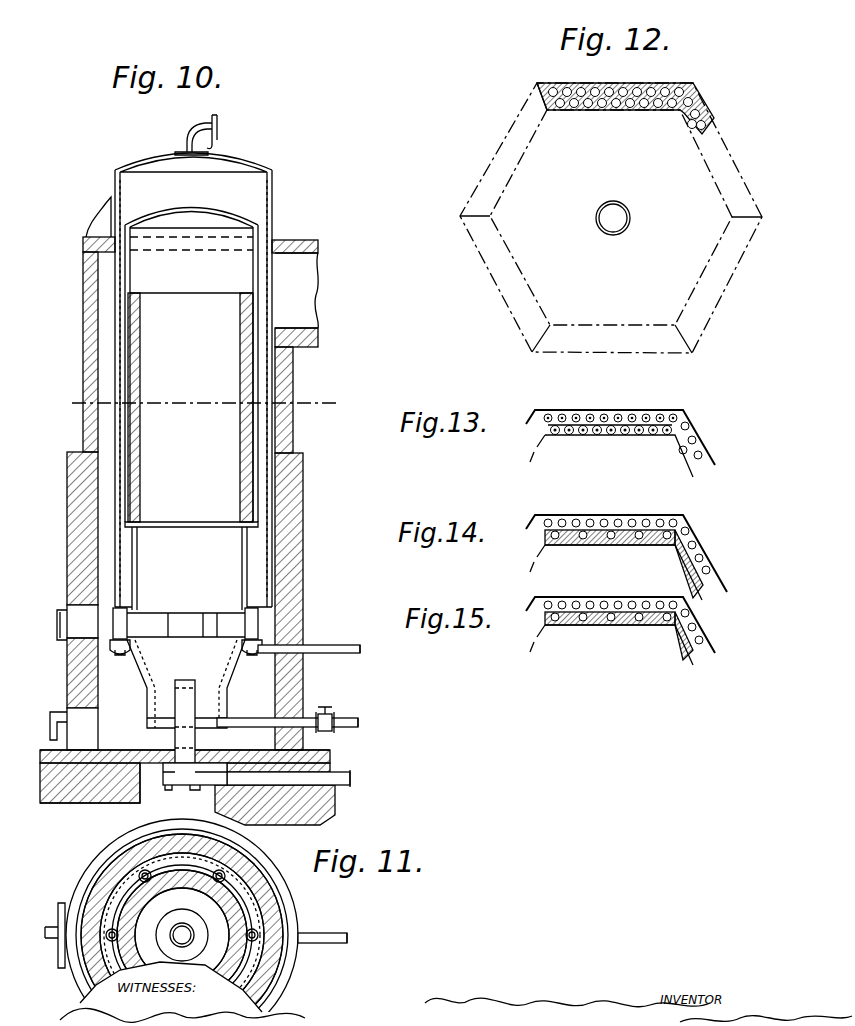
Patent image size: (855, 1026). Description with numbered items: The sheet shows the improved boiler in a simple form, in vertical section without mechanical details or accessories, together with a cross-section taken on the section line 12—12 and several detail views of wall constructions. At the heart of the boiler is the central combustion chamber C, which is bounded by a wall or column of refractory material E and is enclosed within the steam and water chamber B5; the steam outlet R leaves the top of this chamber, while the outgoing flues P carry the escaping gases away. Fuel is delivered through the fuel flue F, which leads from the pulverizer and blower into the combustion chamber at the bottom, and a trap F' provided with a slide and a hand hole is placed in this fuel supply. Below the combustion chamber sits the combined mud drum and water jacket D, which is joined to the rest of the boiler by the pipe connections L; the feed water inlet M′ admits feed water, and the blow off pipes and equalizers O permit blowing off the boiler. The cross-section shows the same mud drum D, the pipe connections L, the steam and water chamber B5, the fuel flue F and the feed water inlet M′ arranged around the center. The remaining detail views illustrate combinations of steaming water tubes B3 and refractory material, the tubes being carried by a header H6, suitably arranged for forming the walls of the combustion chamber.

In FIG. 10, the steam outlet R is at (219, 133).
In FIG. 10, the steam and water chamber B5 is at (250, 204).
In FIG. 11, the steam and water chamber B5 is at (248, 906).
In FIG. 10, the outgoing flues P is at (184, 473).
In FIG. 10, the central combustion chamber C is at (191, 368).
In FIG. 10, the wall or column of refractory material E is at (130, 470).
In FIG. 10, the section line 12 is at (192, 405).
In FIG. 10, the pipe connections L is at (165, 624).
In FIG. 11, the pipe connections L is at (110, 928).
In FIG. 10, the feed water inlet M′ is at (309, 663).
In FIG. 11, the feed water inlet M′ is at (338, 941).
In FIG. 10, the combined mud drum and water jacket D is at (222, 700).
In FIG. 11, the combined mud drum and water jacket D is at (212, 953).
In FIG. 10, the blow off pipes and equalizers O is at (299, 722).
In FIG. 10, the trap F' is at (176, 735).
In FIG. 10, the fuel flue F is at (195, 787).
In FIG. 11, the fuel flue F is at (277, 931).
In FIG. 12, the fuel flue F is at (613, 218).
In FIG. 13, the steaming water tubes B3 is at (632, 411).
In FIG. 14, the steaming water tubes B3 is at (632, 516).
In FIG. 15, the steaming water tubes B3 is at (626, 600).
In FIG. 13, the header H6 is at (685, 411).
In FIG. 14, the header H6 is at (685, 517).
In FIG. 15, the header H6 is at (685, 600).